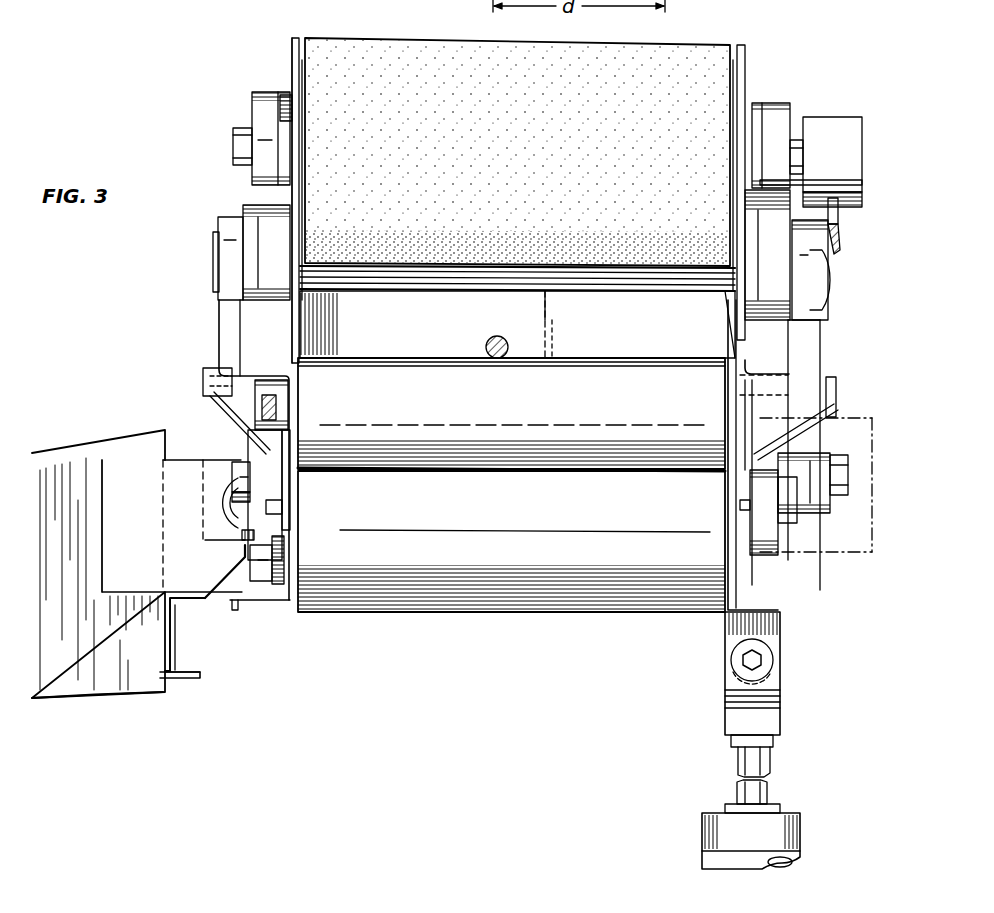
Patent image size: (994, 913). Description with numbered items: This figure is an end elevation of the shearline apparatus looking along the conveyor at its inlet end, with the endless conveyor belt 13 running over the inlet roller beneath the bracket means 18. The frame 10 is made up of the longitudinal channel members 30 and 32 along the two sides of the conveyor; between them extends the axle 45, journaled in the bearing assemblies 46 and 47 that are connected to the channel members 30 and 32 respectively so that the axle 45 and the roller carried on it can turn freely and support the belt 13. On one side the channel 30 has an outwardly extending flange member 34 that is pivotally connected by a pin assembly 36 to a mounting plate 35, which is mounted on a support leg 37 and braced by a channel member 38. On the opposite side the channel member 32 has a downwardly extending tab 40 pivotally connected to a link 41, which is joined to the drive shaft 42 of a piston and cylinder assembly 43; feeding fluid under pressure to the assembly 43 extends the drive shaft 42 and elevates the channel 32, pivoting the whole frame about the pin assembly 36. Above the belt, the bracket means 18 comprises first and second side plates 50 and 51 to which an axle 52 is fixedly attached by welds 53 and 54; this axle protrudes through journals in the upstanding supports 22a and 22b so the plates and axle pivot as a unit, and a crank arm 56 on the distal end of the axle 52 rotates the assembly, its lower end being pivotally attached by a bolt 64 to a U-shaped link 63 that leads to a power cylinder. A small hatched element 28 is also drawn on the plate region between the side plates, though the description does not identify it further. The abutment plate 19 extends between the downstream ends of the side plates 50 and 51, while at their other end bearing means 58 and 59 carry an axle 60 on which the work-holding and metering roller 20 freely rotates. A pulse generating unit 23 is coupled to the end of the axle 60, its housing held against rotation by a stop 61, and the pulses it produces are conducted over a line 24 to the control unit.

The frame 10 is at (238, 604).
The endless conveyor belt 13 is at (466, 612).
The bracket means 18 is at (282, 70).
The abutment plate 19 is at (414, 332).
The work-holding and metering roller 20 is at (390, 42).
The upstanding support 22a is at (242, 268).
The upstanding support 22b is at (800, 300).
The pulse generating unit 23 is at (840, 124).
The line 24 is at (836, 240).
The shaft 28 is at (494, 336).
The channel member 30 is at (214, 370).
The channel member 32 is at (750, 594).
The flange member 34 is at (198, 470).
The mounting plate 35 is at (132, 458).
The pin assembly 36 is at (226, 536).
The support leg 37 is at (164, 692).
The channel member 38 is at (196, 672).
The tab 40 is at (780, 630).
The link 41 is at (766, 712).
The drive shaft 42 is at (778, 786).
The piston and cylinder assembly 43 is at (688, 830).
The axle 45 is at (254, 454).
The bearing assembly 46 is at (250, 476).
The bearing assembly 47 is at (780, 552).
The first side plate 50 is at (294, 40).
The second side plate 51 is at (745, 54).
The axle 52 is at (610, 288).
The weld 53 is at (316, 296).
The weld 54 is at (732, 292).
The crank arm 56 is at (818, 343).
The bearing means 58 is at (252, 112).
The bearing means 59 is at (782, 110).
The axle 60 is at (233, 155).
The stop 61 is at (836, 182).
The U-shaped link 63 is at (828, 510).
The bolt 64 is at (848, 478).